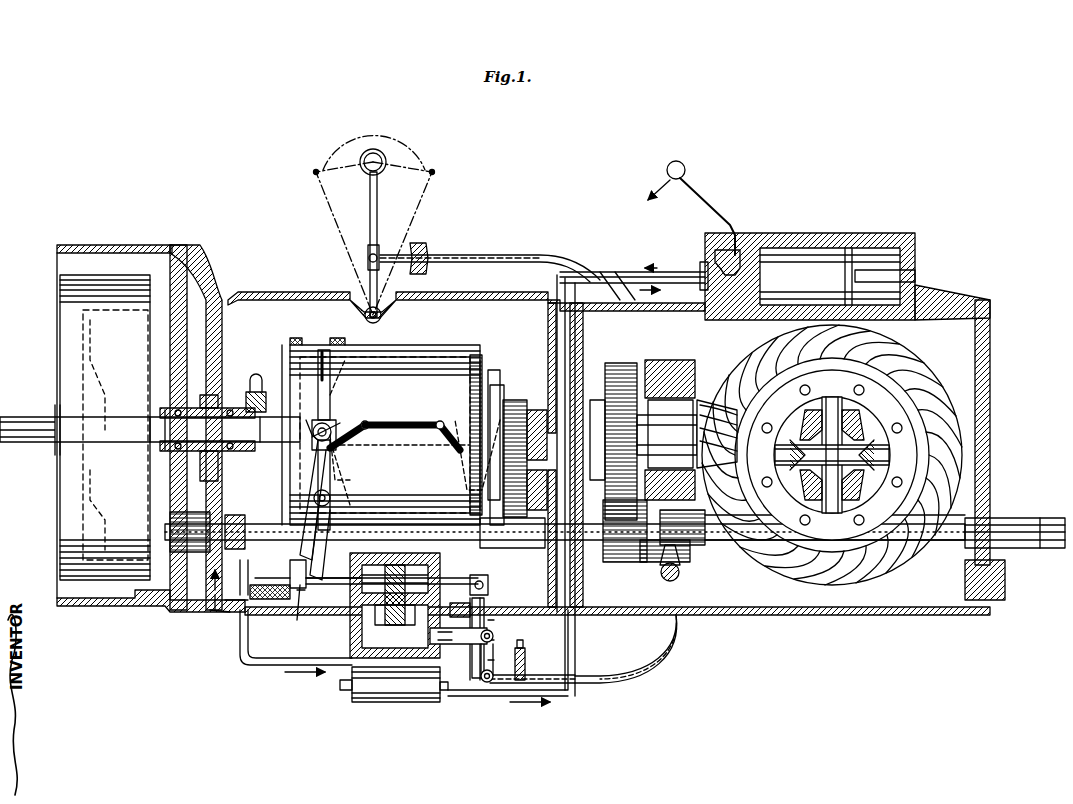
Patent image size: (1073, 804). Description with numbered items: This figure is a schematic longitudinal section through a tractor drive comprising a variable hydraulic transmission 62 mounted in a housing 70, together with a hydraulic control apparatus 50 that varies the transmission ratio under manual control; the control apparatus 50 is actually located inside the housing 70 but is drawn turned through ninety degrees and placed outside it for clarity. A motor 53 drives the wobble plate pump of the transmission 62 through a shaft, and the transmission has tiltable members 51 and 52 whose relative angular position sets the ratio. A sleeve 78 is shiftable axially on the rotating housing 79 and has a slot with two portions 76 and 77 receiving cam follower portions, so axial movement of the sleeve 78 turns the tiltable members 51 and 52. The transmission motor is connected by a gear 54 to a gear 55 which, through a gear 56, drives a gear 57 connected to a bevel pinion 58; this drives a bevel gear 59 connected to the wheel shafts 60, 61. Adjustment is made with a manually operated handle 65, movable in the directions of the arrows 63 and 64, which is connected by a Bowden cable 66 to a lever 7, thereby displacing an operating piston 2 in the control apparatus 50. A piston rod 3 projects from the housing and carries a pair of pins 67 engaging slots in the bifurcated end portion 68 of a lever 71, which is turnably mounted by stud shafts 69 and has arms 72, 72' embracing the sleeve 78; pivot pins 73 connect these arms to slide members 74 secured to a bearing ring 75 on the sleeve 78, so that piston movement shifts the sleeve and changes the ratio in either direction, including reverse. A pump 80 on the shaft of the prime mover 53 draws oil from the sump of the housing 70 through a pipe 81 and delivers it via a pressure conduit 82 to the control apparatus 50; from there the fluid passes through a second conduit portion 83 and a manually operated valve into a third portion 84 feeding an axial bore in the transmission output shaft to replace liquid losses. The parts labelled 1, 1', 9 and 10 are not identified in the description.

The lever 1 is at (461, 647).
The link 1' is at (503, 655).
The operating piston 2 is at (420, 560).
The piston rod 3 is at (445, 577).
The lever 7 is at (492, 624).
The pivot 9 is at (480, 575).
The guide 10 is at (473, 598).
The hydraulic control apparatus 50 is at (388, 712).
The tiltable member 51 is at (292, 362).
The tiltable member 52 is at (508, 385).
The motor 53 is at (140, 396).
The gear 54 is at (506, 400).
The gear 55 is at (540, 598).
The gear 56 is at (618, 560).
The gear 57 is at (620, 366).
The bevel pinion 58 is at (712, 400).
The bevel gear 59 is at (905, 550).
The shaft of tractor wheel 60 is at (880, 415).
The shaft of tractor wheel 61 is at (832, 455).
The hydraulic transmission 62 is at (440, 352).
The arrow 63 is at (336, 172).
The arrow 64 is at (420, 174).
The manually operated handle 65 is at (378, 196).
The Bowden cable 66 is at (465, 260).
The pin 67 is at (305, 600).
The bifurcated end portion 68 is at (298, 590).
The stud shaft 69 is at (292, 495).
The housing 70 is at (278, 290).
The lever 71 is at (318, 535).
The arm 72 is at (400, 432).
The arm 72' is at (477, 455).
The pivot pin 73 is at (362, 416).
The slide member 74 is at (316, 420).
The bearing ring 75 is at (332, 375).
The slot portion 76 is at (358, 434).
The slot portion 77 is at (448, 440).
The sleeve 78 is at (390, 355).
The rotating housing 79 is at (488, 362).
The pump 80 is at (280, 398).
The pipe 81 is at (215, 610).
The pressure conduit 82 is at (268, 673).
The pressure conduit second portion 83 is at (470, 700).
The pressure conduit third portion 84 is at (648, 272).